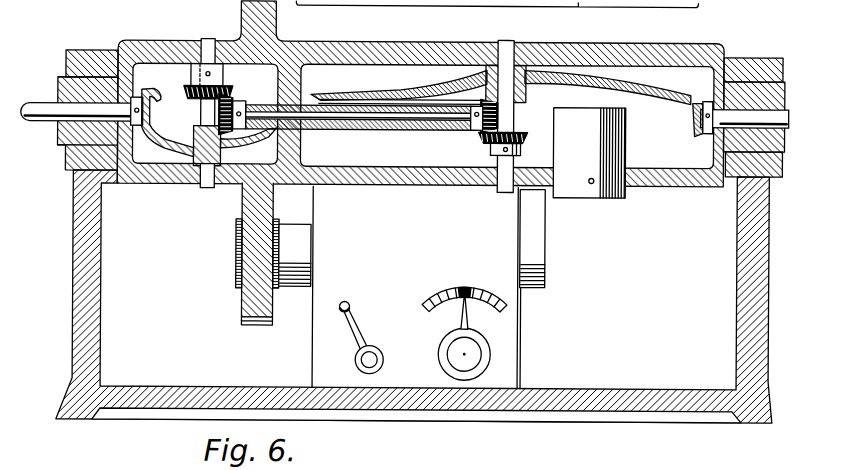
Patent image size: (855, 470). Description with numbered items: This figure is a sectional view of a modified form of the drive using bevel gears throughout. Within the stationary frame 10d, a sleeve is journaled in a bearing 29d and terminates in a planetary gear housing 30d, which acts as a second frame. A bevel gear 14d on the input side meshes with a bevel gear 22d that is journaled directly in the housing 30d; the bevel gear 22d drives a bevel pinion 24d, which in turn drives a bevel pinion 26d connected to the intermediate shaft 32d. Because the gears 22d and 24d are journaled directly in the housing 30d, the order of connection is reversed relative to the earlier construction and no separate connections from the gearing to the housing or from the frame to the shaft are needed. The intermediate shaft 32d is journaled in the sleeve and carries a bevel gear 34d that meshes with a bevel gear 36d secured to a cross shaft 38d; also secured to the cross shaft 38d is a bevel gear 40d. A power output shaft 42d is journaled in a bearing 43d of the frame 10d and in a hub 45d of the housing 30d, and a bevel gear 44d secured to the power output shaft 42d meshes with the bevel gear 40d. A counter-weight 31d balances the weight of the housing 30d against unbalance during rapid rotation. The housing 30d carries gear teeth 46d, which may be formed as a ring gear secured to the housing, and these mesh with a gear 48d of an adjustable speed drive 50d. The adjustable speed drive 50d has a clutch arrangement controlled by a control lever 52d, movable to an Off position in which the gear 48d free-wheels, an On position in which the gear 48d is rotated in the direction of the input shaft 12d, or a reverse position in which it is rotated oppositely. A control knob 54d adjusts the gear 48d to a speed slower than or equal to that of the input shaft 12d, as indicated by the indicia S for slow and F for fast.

The frame 10d is at (95, 302).
The input shaft 12d is at (737, 116).
The bevel gear 14d is at (702, 128).
The bevel gear 22d is at (590, 84).
The bevel pinion 24d is at (517, 133).
The bevel pinion 26d is at (478, 128).
The bearing 29d is at (310, 128).
The planetary gear housing 30d is at (383, 50).
The counter-weight 31d is at (617, 196).
The intermediate shaft 32d is at (367, 117).
The bevel gear 34d is at (235, 93).
The bevel gear 36d is at (197, 90).
The cross shaft 38d is at (207, 188).
The bevel gear 40d is at (172, 148).
The power output shaft 42d is at (35, 110).
The bearing 43d is at (85, 64).
The bevel gear 44d is at (154, 94).
The hub 45d is at (70, 132).
The gear teeth 46d is at (257, 324).
The gear 48d is at (236, 270).
The adjustable speed drive 50d is at (416, 223).
The control lever 52d is at (356, 341).
The control knob 54d is at (461, 325).